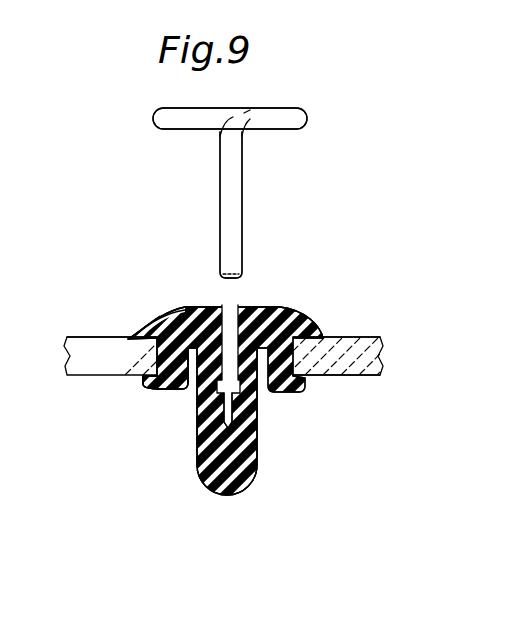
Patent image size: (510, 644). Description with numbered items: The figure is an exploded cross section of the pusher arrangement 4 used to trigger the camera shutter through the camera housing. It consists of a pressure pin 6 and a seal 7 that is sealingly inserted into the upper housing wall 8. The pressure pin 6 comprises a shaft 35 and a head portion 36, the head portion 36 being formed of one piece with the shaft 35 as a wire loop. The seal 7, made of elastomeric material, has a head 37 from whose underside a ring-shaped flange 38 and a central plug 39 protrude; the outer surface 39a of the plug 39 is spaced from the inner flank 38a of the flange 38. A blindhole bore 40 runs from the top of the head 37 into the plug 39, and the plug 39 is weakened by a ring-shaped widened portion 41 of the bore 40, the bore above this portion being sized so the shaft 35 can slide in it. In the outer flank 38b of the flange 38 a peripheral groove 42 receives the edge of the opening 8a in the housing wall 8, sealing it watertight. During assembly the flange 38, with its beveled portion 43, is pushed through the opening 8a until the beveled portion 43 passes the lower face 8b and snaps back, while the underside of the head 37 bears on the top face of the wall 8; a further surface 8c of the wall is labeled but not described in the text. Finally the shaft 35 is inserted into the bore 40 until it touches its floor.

The pusher arrangement 4 is at (88, 272).
The pressure pin 6 is at (283, 210).
The seal 7 is at (310, 298).
The upper housing wall 8 is at (352, 362).
The opening 8a is at (302, 357).
The lower face of housing wall 8b is at (377, 376).
The panel aperture edge 8c is at (130, 337).
The shaft 35 is at (231, 192).
The head portion 36 is at (287, 122).
The head 37 is at (196, 306).
The ring-shaped flange 38 is at (165, 388).
The inner flank of ring-shaped flange 38a is at (188, 386).
The outer flank of ring-shaped flange 38b is at (145, 371).
The plug 39 is at (242, 408).
The outer surface of plug 39a is at (262, 395).
The blindhole bore 40 is at (231, 326).
The ring-shaped widened portion 41 is at (196, 392).
The peripheral groove 42 is at (133, 337).
The beveled portion 43 is at (143, 385).